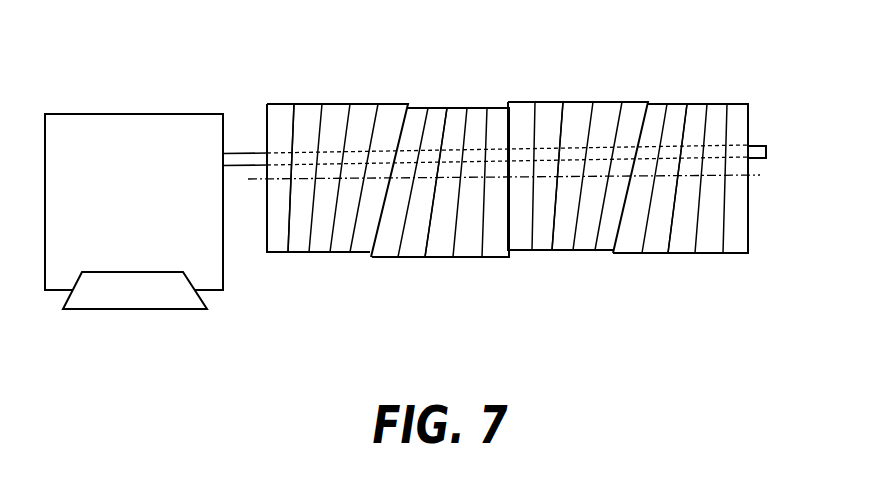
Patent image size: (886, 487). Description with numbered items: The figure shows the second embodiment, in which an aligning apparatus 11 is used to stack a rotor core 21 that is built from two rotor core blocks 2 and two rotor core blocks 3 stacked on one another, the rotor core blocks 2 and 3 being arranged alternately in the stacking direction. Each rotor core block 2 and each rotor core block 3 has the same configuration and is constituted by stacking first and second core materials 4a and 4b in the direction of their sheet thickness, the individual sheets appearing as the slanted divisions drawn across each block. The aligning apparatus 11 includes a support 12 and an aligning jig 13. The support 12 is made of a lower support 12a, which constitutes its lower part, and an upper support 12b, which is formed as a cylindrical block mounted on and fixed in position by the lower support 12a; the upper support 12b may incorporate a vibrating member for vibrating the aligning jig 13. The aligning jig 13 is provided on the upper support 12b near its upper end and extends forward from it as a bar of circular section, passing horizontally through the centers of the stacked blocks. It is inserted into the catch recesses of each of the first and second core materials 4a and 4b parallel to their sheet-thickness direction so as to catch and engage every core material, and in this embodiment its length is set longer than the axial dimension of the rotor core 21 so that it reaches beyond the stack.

The aligning apparatus 11 is at (105, 113).
The support 12 is at (119, 329).
The lower support 12a is at (62, 302).
The upper support 12b is at (45, 272).
The aligning jig 13 is at (753, 144).
The rotor core 21 is at (507, 152).
The rotor core block 2 is at (408, 98).
The rotor core block 3 is at (510, 260).
The first core material 4a is at (455, 112).
The second core material 4b is at (299, 246).